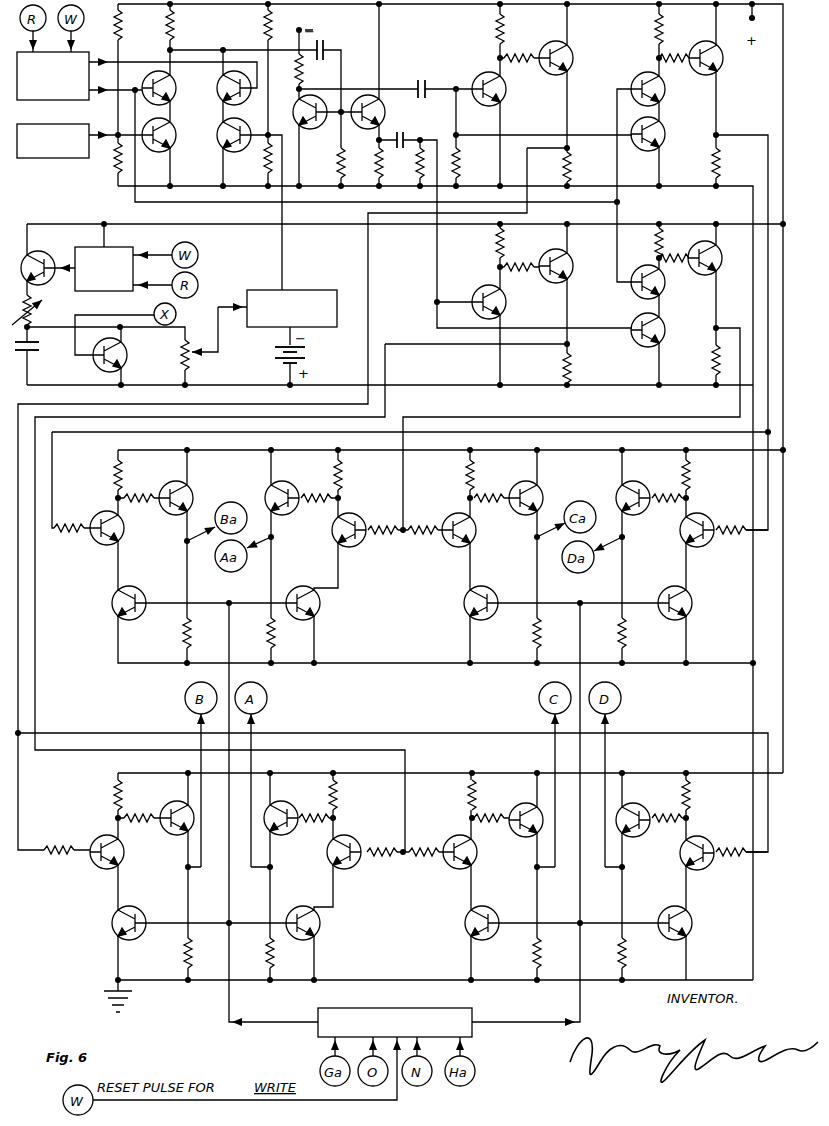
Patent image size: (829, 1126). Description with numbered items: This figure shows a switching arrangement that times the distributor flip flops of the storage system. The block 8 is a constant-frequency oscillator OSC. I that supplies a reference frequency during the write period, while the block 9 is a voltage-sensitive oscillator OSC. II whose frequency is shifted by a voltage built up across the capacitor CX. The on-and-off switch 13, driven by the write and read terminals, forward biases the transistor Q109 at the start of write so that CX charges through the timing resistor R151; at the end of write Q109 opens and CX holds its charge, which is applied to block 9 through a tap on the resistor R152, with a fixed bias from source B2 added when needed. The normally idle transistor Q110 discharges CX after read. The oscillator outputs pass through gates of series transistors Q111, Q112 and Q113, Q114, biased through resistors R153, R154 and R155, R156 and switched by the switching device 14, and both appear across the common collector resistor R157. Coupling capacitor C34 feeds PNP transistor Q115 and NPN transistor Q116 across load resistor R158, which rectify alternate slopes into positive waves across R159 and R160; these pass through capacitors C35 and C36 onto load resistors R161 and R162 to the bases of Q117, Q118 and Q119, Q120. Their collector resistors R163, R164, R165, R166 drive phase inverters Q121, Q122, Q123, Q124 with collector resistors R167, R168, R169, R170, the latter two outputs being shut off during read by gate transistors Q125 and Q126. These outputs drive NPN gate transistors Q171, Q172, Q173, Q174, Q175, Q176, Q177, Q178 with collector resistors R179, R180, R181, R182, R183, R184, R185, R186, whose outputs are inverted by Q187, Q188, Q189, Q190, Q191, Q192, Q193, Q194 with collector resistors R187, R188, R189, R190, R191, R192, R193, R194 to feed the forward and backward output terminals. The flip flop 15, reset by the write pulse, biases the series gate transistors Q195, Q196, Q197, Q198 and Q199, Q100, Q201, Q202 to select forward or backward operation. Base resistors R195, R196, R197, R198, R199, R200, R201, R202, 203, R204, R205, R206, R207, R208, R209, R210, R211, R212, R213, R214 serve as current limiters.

The switching device 14 is at (55, 102).
The oscillator OSC. I 8 is at (50, 160).
The on-and-off switch 13 is at (128, 247).
The oscillator OSC. II 9 is at (292, 290).
The flip flop 15 is at (378, 1008).
The transistor Q109 is at (44, 257).
The transistor Q110 is at (130, 352).
The gate transistor Q111 is at (176, 140).
The gate transistor Q112 is at (176, 86).
The gate transistor Q113 is at (217, 135).
The gate transistor Q114 is at (216, 90).
The PNP transistor Q115 is at (315, 122).
The NPN transistor Q116 is at (389, 112).
The transistor Q117 is at (510, 89).
The transistor Q118 is at (666, 132).
The transistor Q119 is at (509, 302).
The transistor Q120 is at (668, 330).
The phase inverter transistor Q121 is at (576, 58).
The phase inverter transistor Q122 is at (726, 58).
The phase inverter transistor Q123 is at (573, 274).
The phase inverter transistor Q124 is at (697, 266).
The gate transistor Q125 is at (668, 89).
The gate transistor Q126 is at (665, 289).
The gate transistor Q171 is at (127, 529).
The gate transistor Q172 is at (677, 534).
The gate transistor Q173 is at (359, 524).
The gate transistor Q174 is at (479, 530).
The gate transistor Q175 is at (126, 852).
The gate transistor Q176 is at (707, 845).
The gate transistor Q177 is at (325, 855).
The gate transistor Q178 is at (477, 859).
The phase inverter transistor Q187 is at (194, 495).
The phase inverter transistor Q188 is at (639, 487).
The phase inverter transistor Q189 is at (290, 508).
The phase inverter transistor Q190 is at (545, 495).
The phase inverter transistor Q191 is at (166, 809).
The phase inverter transistor Q192 is at (637, 811).
The phase inverter transistor Q193 is at (287, 810).
The phase inverter transistor Q194 is at (516, 810).
The gate transistor Q195 is at (107, 603).
The gate transistor Q196 is at (323, 603).
The gate transistor Q197 is at (108, 923).
The gate transistor Q198 is at (325, 923).
The gate transistor Q199 is at (459, 603).
The gate transistor Q100 is at (695, 603).
The gate transistor Q201 is at (492, 915).
The gate transistor Q202 is at (695, 923).
The timing resistor R151 is at (53, 310).
The resistor R152 is at (205, 360).
The resistor R153 is at (101, 163).
The resistor R154 is at (136, 30).
The resistor R155 is at (251, 163).
The resistor R156 is at (246, 25).
The common collector circuit resistor R157 is at (191, 25).
The load resistor R158 is at (326, 165).
The collector circuit resistor R159 is at (317, 71).
The emitter circuit resistor R160 is at (370, 161).
The load resistor R161 is at (473, 159).
The load resistor R162 is at (411, 161).
The collector circuit resistor R163 is at (477, 29).
The collector circuit resistor R164 is at (640, 28).
The collector circuit resistor R165 is at (475, 243).
The collector circuit resistor R166 is at (641, 243).
The collector circuit resistor R167 is at (586, 166).
The collector circuit resistor R168 is at (698, 166).
The collector circuit resistor R169 is at (588, 368).
The collector circuit resistor R170 is at (693, 360).
The collector circuit resistor R179 is at (93, 475).
The collector circuit resistor R180 is at (708, 475).
The collector circuit resistor R181 is at (360, 475).
The collector circuit resistor R182 is at (448, 475).
The collector circuit resistor R183 is at (99, 795).
The collector circuit resistor R184 is at (706, 795).
The collector circuit resistor R185 is at (355, 795).
The collector circuit resistor R186 is at (450, 795).
The collector circuit resistor R187 is at (169, 634).
The collector circuit resistor R188 is at (641, 636).
The collector circuit resistor R189 is at (289, 636).
The collector circuit resistor R190 is at (515, 636).
The collector circuit resistor R191 is at (168, 953).
The collector circuit resistor R192 is at (642, 956).
The collector circuit resistor R193 is at (288, 955).
The collector circuit resistor R194 is at (517, 954).
The current limiter resistor R195 is at (522, 49).
The current limiter resistor R196 is at (682, 45).
The current limiter resistor R197 is at (528, 253).
The current limiter resistor R198 is at (681, 246).
The current limiter resistor R199 is at (145, 489).
The current limiter resistor R200 is at (70, 539).
The current limiter resistor R201 is at (317, 490).
The current limiter resistor R202 is at (497, 488).
The current limiter resistor 203 is at (665, 511).
The current limiter resistor R204 is at (730, 542).
The current limiter resistor R205 is at (385, 541).
The current limiter resistor R206 is at (429, 541).
The current limiter resistor R207 is at (62, 860).
The current limiter resistor R208 is at (143, 828).
The current limiter resistor R209 is at (315, 828).
The current limiter resistor R210 is at (384, 861).
The current limiter resistor R211 is at (427, 861).
The current limiter resistor R212 is at (494, 830).
The current limiter resistor R213 is at (662, 832).
The current limiter resistor R214 is at (729, 864).
The coupling capacitor C34 is at (334, 46).
The coupling capacitor C35 is at (413, 80).
The coupling capacitor C36 is at (418, 134).
The capacitor CX is at (33, 360).
The bias source B2 is at (302, 356).